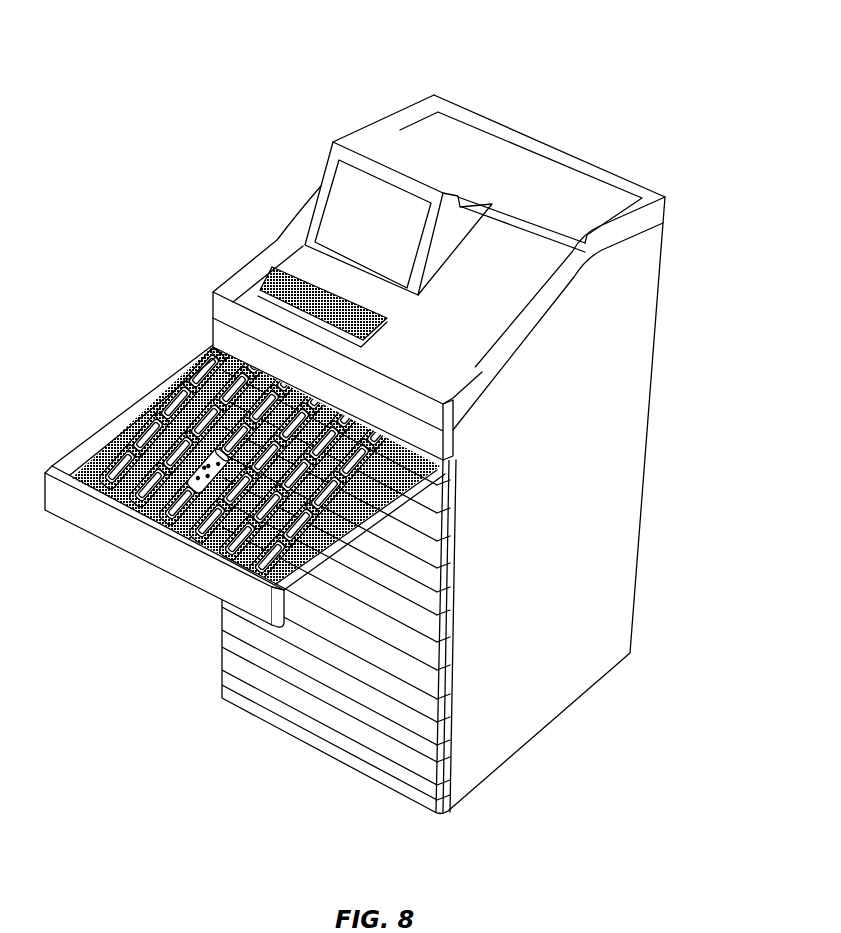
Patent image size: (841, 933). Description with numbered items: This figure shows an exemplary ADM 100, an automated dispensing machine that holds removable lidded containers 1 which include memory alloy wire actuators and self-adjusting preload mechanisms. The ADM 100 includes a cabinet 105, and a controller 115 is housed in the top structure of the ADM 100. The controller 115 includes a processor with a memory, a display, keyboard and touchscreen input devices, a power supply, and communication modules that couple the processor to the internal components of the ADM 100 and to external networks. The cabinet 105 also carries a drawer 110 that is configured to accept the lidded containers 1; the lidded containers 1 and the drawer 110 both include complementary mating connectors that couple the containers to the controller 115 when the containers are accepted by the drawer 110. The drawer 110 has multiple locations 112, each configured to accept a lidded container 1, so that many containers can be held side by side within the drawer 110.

The ADM 100 is at (389, 421).
The cabinet 105 is at (618, 424).
The drawer 110 is at (244, 471).
The locations 112 is at (244, 452).
The lidded container 1 is at (200, 378).
The controller 115 is at (345, 206).